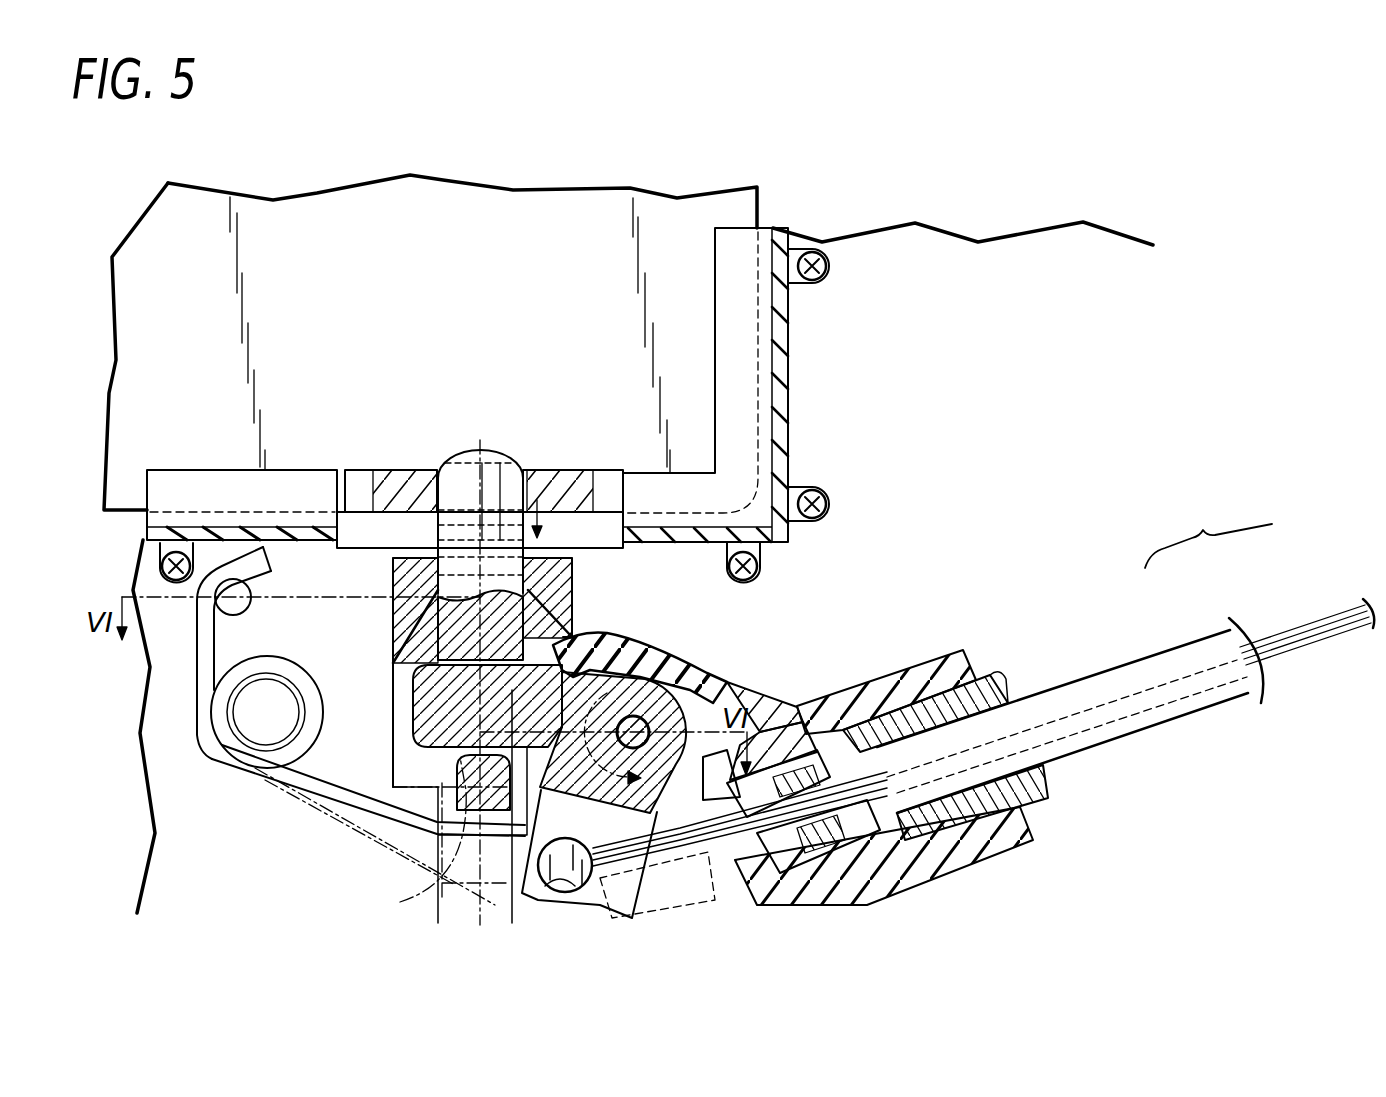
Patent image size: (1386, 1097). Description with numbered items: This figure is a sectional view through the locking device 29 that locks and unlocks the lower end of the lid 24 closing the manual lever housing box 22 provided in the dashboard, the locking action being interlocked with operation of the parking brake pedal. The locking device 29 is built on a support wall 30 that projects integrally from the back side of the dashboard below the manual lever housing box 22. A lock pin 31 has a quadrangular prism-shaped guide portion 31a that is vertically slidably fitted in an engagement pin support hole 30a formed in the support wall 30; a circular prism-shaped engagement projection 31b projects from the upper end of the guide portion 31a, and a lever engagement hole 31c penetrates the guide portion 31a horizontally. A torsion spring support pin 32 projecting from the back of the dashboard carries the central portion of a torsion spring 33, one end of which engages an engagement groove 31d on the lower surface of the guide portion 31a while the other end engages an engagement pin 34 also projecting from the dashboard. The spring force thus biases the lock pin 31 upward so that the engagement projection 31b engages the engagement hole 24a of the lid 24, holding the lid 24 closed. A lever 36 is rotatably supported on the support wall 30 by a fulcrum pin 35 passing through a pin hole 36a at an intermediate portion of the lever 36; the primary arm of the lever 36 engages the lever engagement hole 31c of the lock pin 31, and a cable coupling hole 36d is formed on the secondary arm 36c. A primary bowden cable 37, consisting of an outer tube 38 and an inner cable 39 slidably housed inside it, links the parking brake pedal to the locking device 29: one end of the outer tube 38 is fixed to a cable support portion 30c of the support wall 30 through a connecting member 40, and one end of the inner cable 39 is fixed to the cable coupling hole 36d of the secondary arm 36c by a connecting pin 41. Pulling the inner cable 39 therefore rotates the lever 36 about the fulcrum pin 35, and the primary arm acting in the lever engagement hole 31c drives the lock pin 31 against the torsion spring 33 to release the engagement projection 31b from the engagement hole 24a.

The manual lever housing box 22 is at (803, 355).
The lid 24 is at (772, 197).
The engagement hole 24a is at (447, 456).
The locking device 29 is at (597, 687).
The support wall 30 is at (712, 655).
The engagement pin support hole 30a is at (440, 535).
The cable support portion 30c is at (887, 683).
The lock pin 31 is at (550, 581).
The guide portion 31a is at (448, 630).
The engagement projection 31b is at (493, 448).
The lever engagement hole 31c is at (443, 710).
The engagement groove 31d is at (402, 901).
The torsion spring support pin 32 is at (243, 737).
The torsion spring 33 is at (333, 793).
The engagement pin 34 is at (238, 608).
The fulcrum pin 35 is at (634, 714).
The lever 36 is at (590, 662).
The pin hole 36a is at (700, 690).
The secondary arm 36c is at (638, 868).
The cable coupling hole 36d is at (547, 893).
The primary bowden cable 37 is at (1125, 656).
The outer tube 38 is at (1173, 652).
The inner cable 39 is at (1307, 623).
The connecting member 40 is at (950, 710).
The connecting pin 41 is at (540, 880).